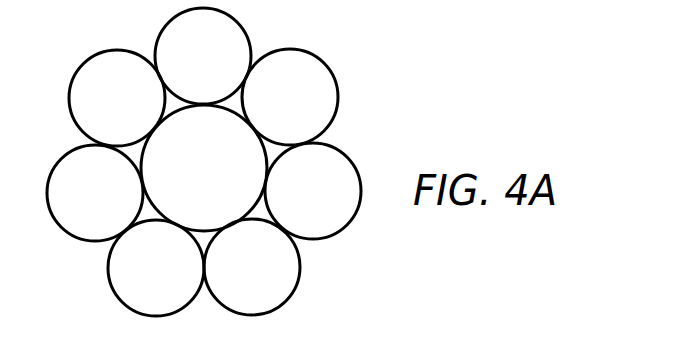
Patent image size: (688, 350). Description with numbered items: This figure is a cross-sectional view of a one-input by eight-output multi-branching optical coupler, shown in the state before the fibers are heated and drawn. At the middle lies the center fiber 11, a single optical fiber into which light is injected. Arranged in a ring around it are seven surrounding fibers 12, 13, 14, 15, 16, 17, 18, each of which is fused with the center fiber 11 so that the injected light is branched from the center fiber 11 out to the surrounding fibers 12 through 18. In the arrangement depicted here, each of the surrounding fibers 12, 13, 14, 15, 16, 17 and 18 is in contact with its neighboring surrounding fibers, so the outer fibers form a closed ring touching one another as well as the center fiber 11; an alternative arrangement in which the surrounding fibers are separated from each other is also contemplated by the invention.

The center fiber 11 is at (204, 168).
The surrounding fiber 12 is at (203, 56).
The surrounding fiber 13 is at (290, 97).
The surrounding fiber 14 is at (313, 191).
The surrounding fiber 15 is at (252, 267).
The surrounding fiber 16 is at (156, 268).
The surrounding fiber 17 is at (95, 193).
The surrounding fiber 18 is at (117, 98).